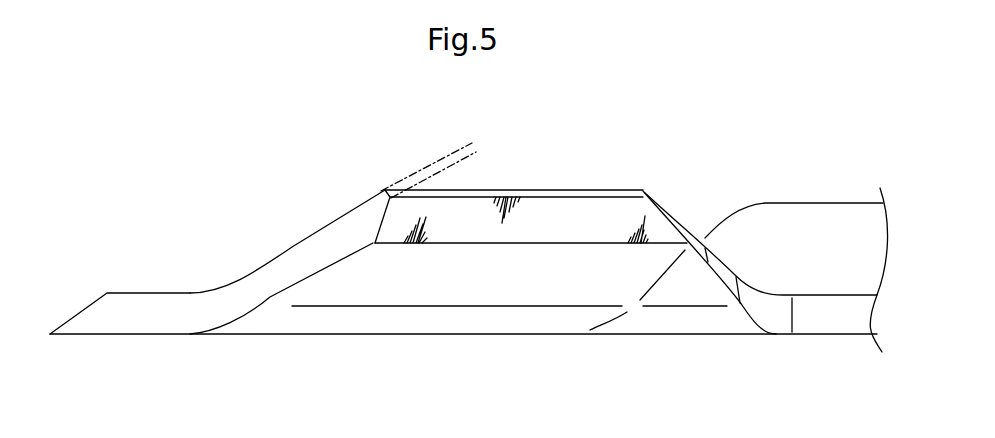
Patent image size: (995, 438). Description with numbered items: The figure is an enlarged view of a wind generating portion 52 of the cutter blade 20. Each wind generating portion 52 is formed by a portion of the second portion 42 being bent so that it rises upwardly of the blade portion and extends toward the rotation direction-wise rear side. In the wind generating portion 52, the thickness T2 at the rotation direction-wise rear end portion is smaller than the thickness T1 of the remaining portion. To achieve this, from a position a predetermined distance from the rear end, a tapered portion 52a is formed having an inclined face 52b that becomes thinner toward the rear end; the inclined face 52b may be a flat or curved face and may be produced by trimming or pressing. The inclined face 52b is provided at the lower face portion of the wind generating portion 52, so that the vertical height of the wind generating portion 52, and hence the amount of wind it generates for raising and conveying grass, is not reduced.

The structure 20 is at (135, 193).
The second portion 42 is at (644, 357).
The wind generating portion 52 is at (278, 252).
The tapered portion 52a is at (376, 195).
The inclined face 52b is at (543, 218).
The thickness of the remaining portion T1 is at (328, 236).
The thickness at the rotation direction-wise rear end portion T2 is at (480, 170).